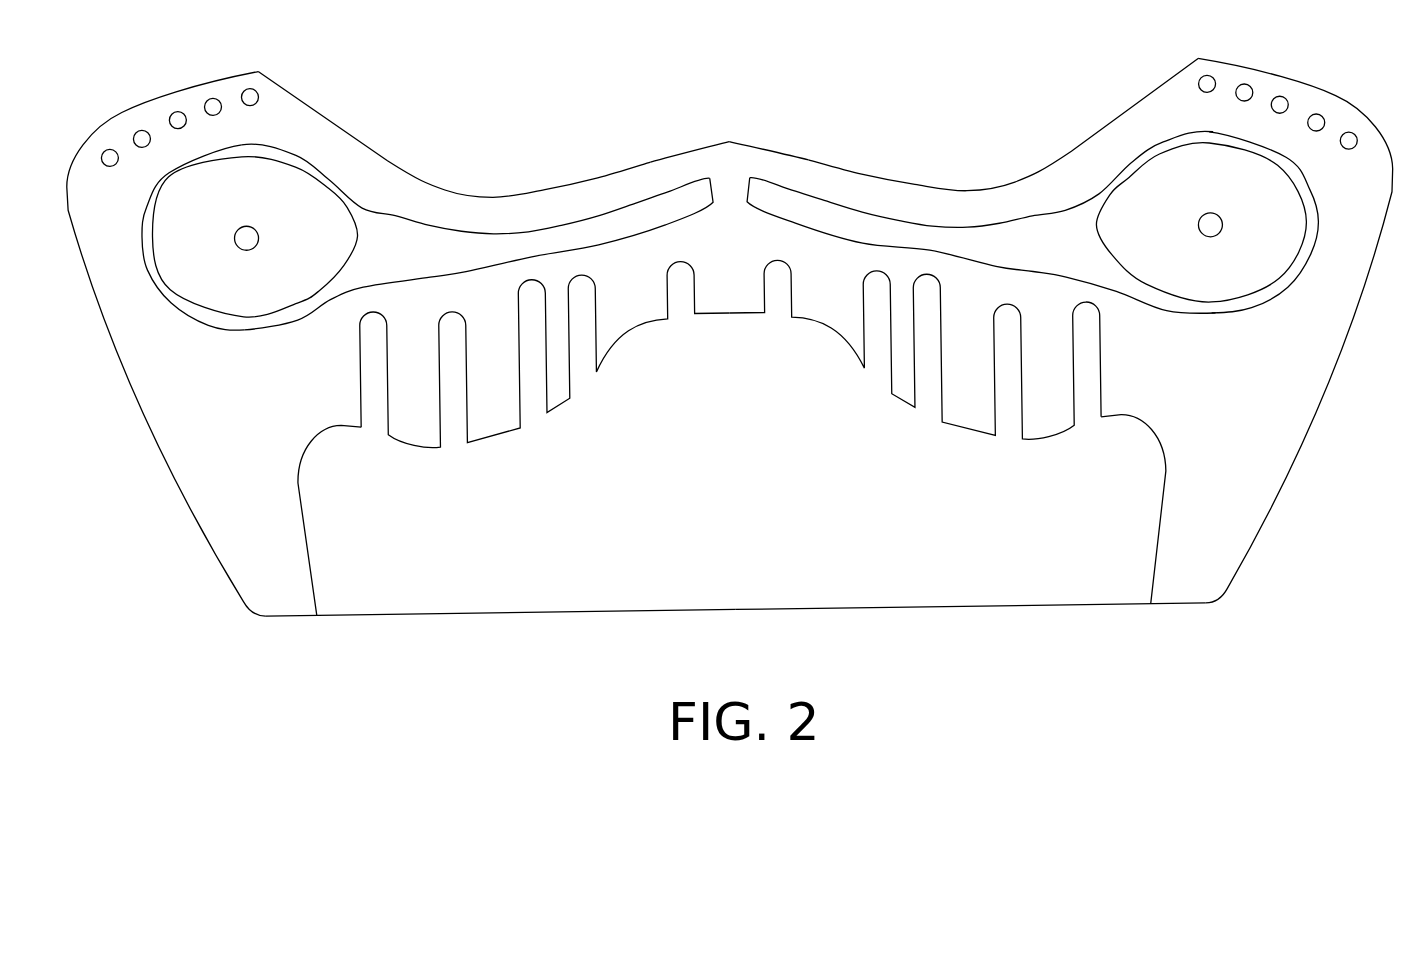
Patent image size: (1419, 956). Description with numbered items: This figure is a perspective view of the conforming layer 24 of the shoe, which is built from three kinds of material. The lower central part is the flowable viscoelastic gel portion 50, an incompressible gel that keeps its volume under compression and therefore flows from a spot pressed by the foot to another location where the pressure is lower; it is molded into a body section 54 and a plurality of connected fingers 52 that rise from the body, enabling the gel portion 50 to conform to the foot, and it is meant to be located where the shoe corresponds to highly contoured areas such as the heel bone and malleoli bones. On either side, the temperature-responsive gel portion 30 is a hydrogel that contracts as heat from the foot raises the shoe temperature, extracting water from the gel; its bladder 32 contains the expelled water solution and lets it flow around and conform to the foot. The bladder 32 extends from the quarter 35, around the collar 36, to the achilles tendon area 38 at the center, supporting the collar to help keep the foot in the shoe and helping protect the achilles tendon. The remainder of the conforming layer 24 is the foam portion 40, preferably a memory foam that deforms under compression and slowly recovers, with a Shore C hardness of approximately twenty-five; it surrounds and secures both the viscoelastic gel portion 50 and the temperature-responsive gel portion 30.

The conforming layer 24 is at (1350, 112).
The temperature-responsive gel portion 30 is at (300, 200).
The gel bladder 32 is at (547, 242).
The quarter 35 is at (282, 128).
The collar 36 is at (498, 195).
The achilles tendon area 38 is at (727, 143).
The foam portion 40 is at (1297, 362).
The viscoelastic gel portion 50 is at (1003, 607).
The fingers 52 is at (1090, 373).
The body section 54 is at (1137, 557).